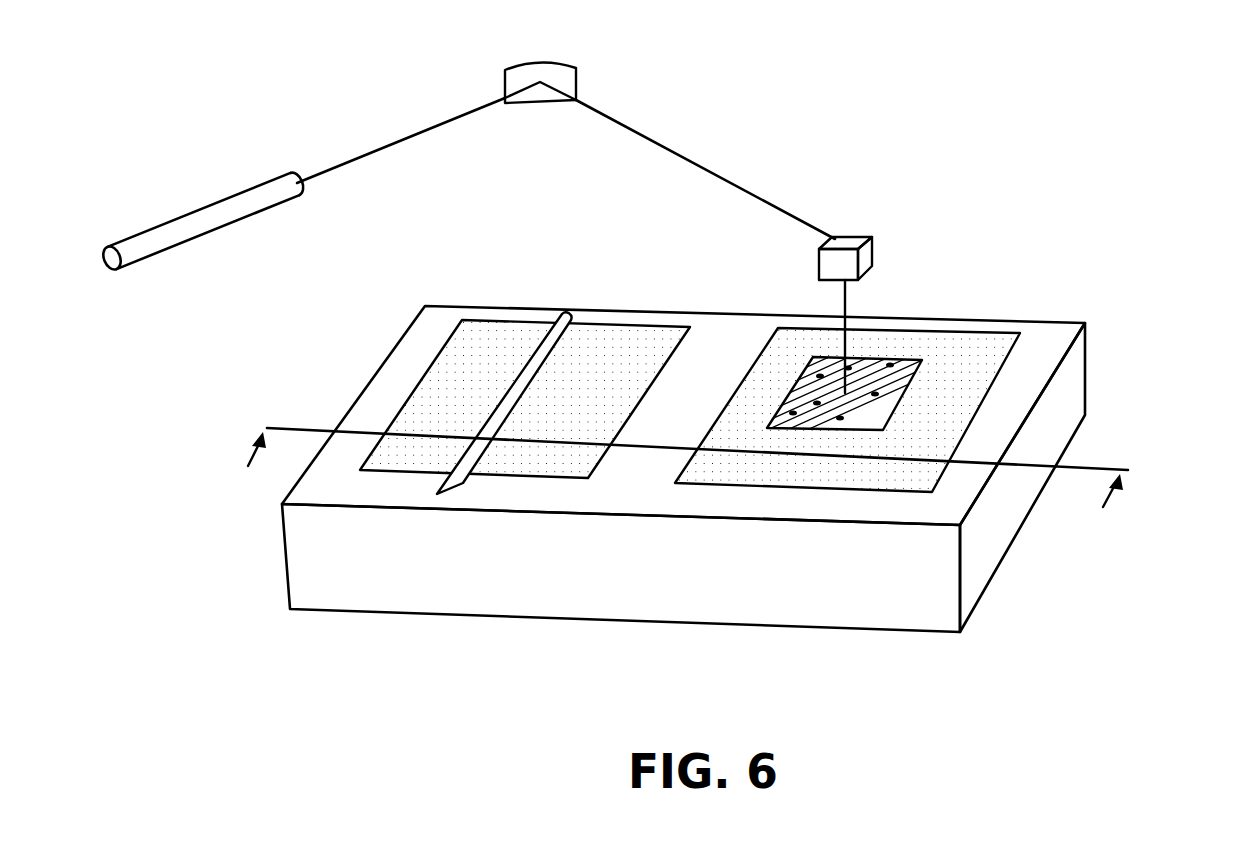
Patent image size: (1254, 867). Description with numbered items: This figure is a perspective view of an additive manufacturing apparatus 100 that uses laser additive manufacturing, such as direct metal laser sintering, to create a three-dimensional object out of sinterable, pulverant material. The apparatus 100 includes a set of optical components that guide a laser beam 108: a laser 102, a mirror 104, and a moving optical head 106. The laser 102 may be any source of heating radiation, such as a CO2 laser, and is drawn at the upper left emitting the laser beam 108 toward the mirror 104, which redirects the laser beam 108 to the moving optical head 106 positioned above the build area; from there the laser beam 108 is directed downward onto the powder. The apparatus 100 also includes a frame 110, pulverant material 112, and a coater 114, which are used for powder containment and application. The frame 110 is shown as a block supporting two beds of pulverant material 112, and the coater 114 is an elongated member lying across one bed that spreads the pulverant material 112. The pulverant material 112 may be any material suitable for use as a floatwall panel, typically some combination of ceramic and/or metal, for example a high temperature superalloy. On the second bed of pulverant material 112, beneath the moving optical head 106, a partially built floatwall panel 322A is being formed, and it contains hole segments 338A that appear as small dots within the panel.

The additive manufacturing apparatus 100 is at (1128, 243).
The laser 102 is at (163, 238).
The mirror 104 is at (560, 73).
The moving optical head 106 is at (843, 240).
The laser beam 108 is at (392, 143).
The frame 110 is at (380, 493).
The pulverant material 112 is at (538, 462).
The coater 114 is at (548, 343).
The partially built floatwall panel 322A is at (903, 385).
The hole segments 338A is at (793, 413).